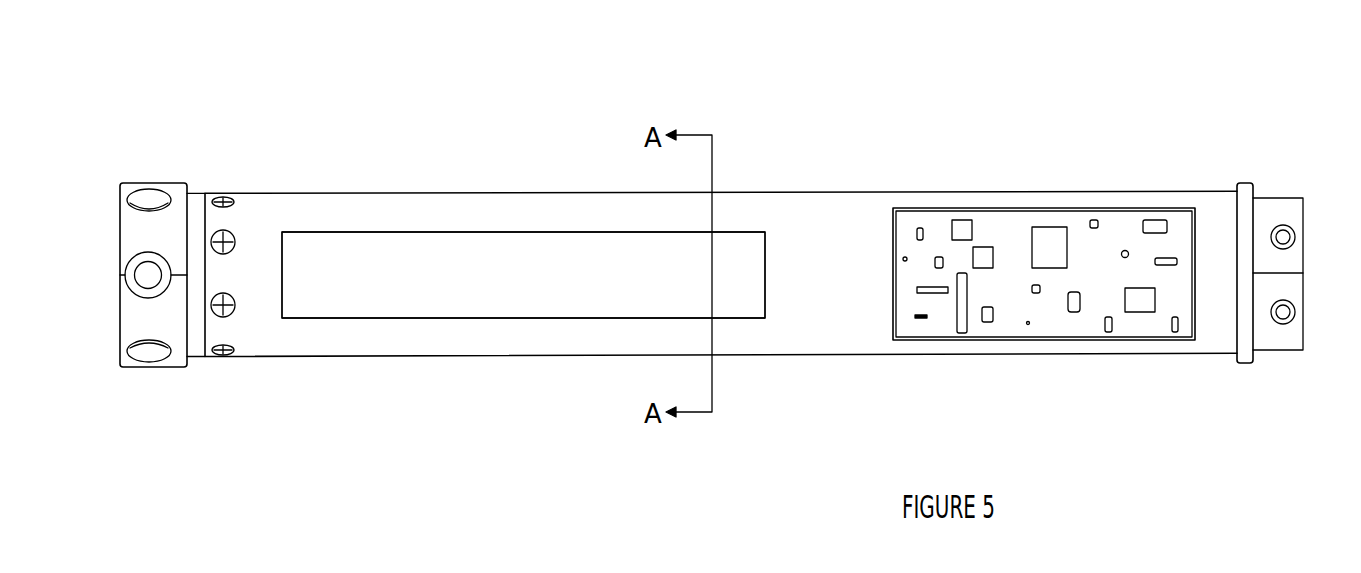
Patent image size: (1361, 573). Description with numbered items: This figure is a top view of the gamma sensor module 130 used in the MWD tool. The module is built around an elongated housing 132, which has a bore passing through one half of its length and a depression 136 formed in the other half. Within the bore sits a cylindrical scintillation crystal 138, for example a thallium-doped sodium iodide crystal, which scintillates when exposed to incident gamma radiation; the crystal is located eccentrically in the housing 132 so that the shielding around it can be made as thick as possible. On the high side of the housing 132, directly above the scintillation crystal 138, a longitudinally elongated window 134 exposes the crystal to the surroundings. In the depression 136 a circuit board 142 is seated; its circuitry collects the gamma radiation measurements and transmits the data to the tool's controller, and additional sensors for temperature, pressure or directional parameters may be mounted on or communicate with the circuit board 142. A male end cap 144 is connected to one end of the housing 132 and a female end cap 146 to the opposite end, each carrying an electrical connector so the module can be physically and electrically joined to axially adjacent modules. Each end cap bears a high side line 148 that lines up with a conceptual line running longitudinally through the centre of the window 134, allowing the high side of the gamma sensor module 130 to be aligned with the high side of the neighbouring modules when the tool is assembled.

The gamma sensor module 130 is at (373, 88).
The housing 132 is at (815, 227).
The window 134 is at (405, 232).
The depression 136 is at (1017, 207).
The scintillation crystal 138 is at (510, 267).
The circuit board 142 is at (1117, 233).
The male end cap 144 is at (1262, 210).
The female end cap 146 is at (135, 230).
The high side line 148 is at (177, 282).